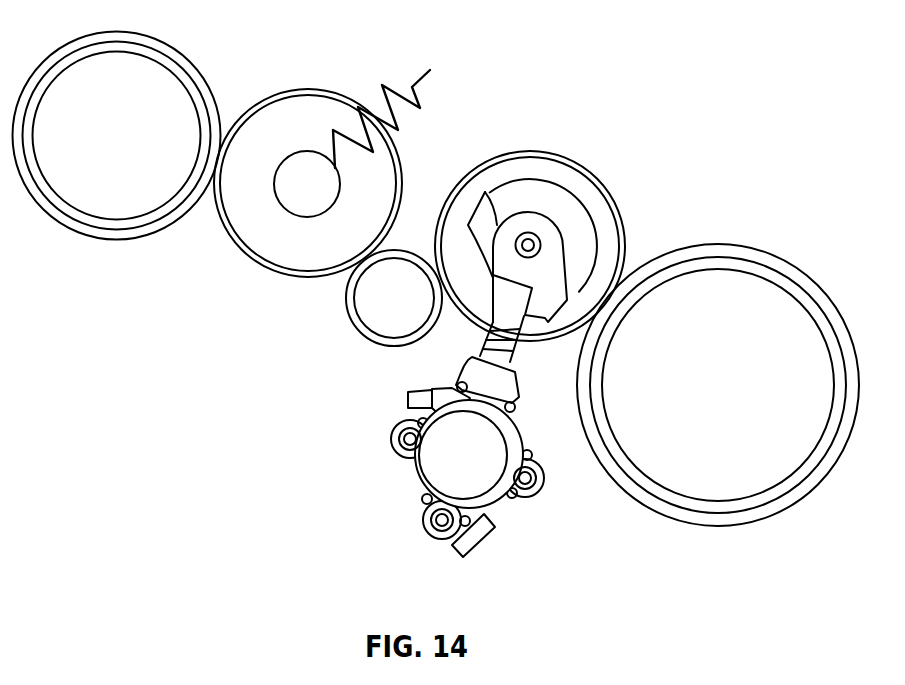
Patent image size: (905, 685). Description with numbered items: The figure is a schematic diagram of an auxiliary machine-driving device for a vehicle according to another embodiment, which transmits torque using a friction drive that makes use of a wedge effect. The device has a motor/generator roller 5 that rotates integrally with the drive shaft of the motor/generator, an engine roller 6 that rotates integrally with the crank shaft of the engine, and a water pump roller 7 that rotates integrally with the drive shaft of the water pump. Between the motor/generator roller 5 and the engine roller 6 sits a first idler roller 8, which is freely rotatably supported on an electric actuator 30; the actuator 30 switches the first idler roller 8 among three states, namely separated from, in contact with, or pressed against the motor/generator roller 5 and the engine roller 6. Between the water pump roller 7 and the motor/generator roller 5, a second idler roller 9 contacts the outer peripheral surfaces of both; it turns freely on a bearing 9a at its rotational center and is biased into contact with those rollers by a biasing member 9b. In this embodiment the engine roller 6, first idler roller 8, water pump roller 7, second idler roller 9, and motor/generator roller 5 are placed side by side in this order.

The motor/generator roller 5 is at (352, 329).
The engine roller 6 is at (767, 252).
The water pump roller 7 is at (100, 241).
The first idler roller 8 is at (588, 192).
The second idler roller 9 is at (260, 268).
The bearing 9a is at (303, 152).
The biasing member 9b is at (417, 78).
The actuator 30 is at (437, 468).